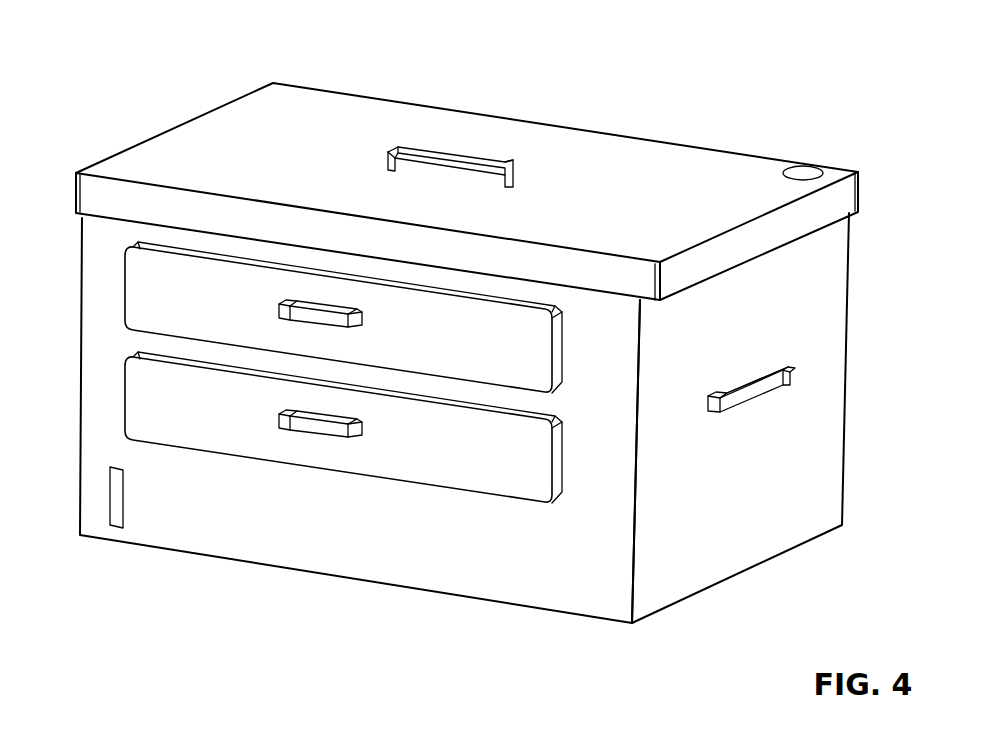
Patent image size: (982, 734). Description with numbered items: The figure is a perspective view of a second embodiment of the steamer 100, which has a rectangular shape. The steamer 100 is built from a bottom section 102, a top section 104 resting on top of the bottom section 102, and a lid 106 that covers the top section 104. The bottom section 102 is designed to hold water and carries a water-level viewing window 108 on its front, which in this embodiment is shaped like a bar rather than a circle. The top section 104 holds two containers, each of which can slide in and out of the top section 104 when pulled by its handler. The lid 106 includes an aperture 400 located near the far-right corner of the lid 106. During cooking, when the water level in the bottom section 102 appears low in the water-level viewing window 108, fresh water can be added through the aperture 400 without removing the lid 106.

The steamer 100 is at (128, 45).
The bottom section 102 is at (489, 557).
The top section 104 is at (824, 373).
The lid 106 is at (141, 157).
The water-level viewing window 108 is at (113, 500).
The aperture 400 is at (808, 166).